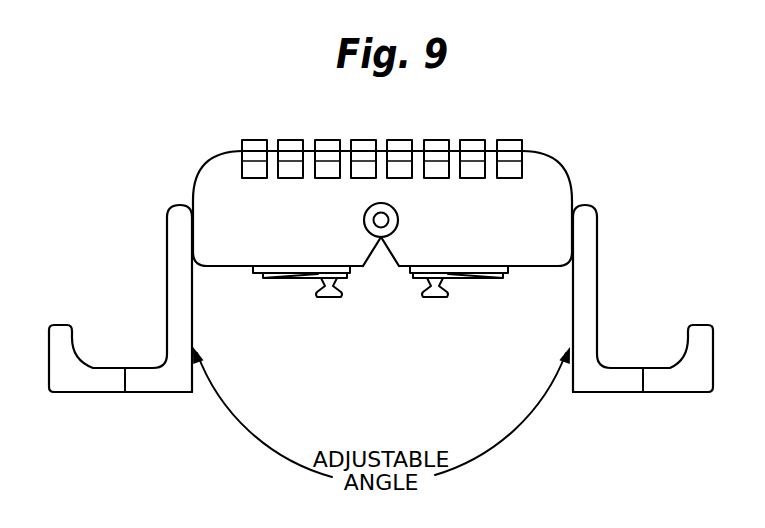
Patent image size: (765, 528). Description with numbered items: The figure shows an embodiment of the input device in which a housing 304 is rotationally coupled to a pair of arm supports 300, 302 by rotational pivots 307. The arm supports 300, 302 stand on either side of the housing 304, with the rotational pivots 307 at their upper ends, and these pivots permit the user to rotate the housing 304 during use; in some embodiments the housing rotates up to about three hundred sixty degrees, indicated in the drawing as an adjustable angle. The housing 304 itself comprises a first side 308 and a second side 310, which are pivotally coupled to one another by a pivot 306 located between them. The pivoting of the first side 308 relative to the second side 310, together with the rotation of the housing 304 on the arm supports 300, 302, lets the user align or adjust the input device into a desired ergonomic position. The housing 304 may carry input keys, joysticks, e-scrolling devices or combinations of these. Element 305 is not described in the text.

The arm support 300 is at (90, 384).
The arm support 302 is at (620, 384).
The housing 304 is at (380, 175).
The support arms 305 is at (190, 310).
The pivot 306 is at (381, 203).
The rotational pivot 307 is at (173, 230).
The first side 308 is at (227, 170).
The second side 310 is at (540, 167).